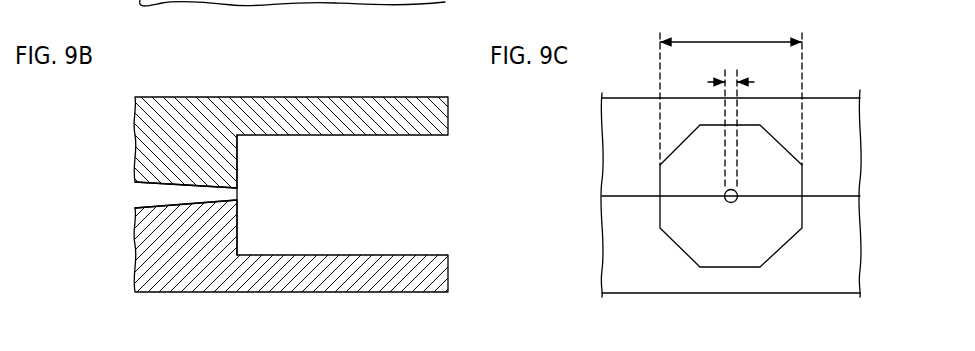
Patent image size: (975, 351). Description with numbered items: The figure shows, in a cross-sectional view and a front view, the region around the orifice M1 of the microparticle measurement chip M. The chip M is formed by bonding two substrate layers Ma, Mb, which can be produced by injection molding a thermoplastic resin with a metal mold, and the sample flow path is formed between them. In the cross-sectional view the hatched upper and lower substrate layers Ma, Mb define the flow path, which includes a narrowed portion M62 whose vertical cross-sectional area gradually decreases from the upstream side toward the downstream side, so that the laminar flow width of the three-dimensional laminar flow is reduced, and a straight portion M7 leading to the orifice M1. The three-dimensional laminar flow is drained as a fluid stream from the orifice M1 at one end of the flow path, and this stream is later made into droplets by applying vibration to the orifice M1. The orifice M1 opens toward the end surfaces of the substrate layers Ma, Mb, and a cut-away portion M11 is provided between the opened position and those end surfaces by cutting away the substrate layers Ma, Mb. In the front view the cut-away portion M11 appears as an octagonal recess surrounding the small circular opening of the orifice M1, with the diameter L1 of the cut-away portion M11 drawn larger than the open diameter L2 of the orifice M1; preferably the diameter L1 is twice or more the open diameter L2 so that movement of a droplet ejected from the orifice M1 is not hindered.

In FIG. 9B, the substrate layer Ma is at (449, 107).
In FIG. 9C, the substrate layer Ma is at (848, 150).
In FIG. 9B, the substrate layer Mb is at (449, 271).
In FIG. 9C, the substrate layer Mb is at (848, 252).
In FIG. 9B, the orifice M1 is at (236, 197).
In FIG. 9C, the orifice M1 is at (731, 203).
In FIG. 9B, the cut-away portion M11 is at (448, 135).
In FIG. 9C, the cut-away portion M11 is at (734, 268).
In FIG. 9B, the narrowed portion M62 is at (197, 187).
In FIG. 9B, the straight portion M7 is at (228, 202).
In FIG. 9C, the microparticle measurement chip M is at (843, 82).
In FIG. 9C, the diameter of cut-away portion L1 is at (731, 87).
In FIG. 9C, the open diameter of orifice L2 is at (731, 117).